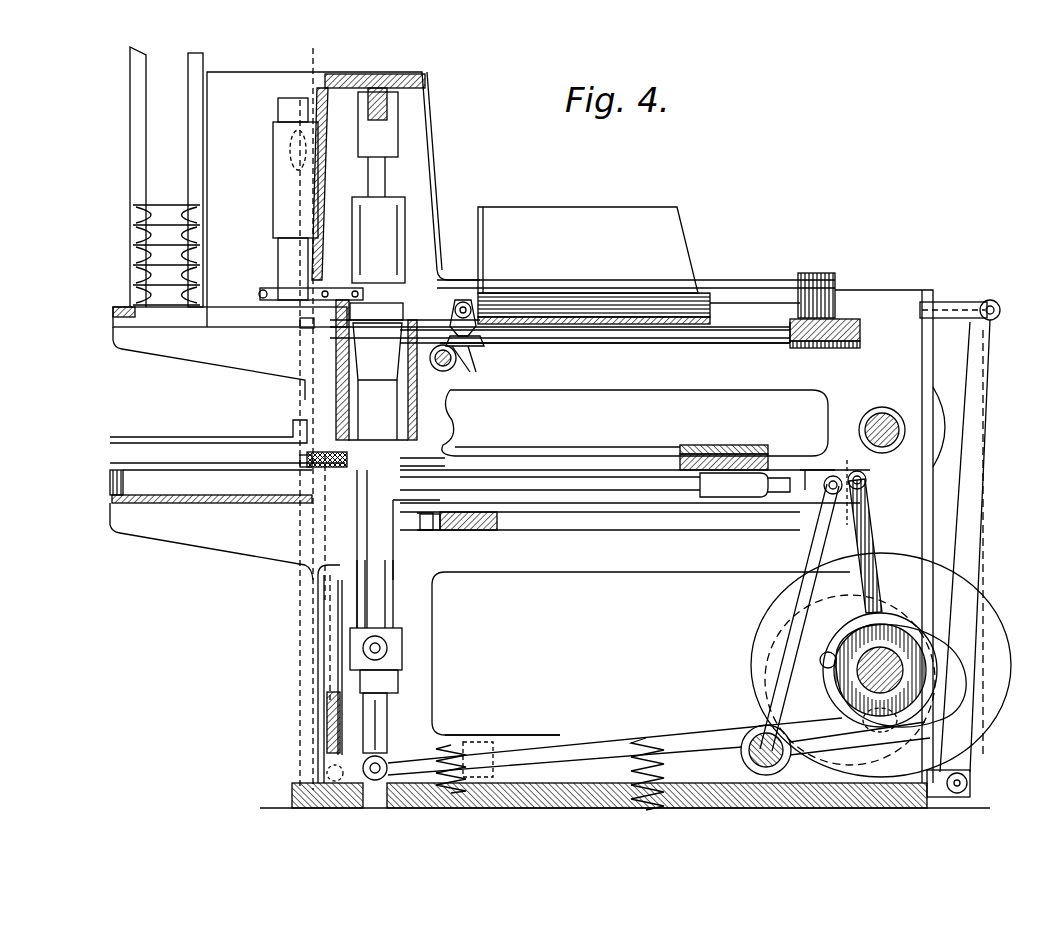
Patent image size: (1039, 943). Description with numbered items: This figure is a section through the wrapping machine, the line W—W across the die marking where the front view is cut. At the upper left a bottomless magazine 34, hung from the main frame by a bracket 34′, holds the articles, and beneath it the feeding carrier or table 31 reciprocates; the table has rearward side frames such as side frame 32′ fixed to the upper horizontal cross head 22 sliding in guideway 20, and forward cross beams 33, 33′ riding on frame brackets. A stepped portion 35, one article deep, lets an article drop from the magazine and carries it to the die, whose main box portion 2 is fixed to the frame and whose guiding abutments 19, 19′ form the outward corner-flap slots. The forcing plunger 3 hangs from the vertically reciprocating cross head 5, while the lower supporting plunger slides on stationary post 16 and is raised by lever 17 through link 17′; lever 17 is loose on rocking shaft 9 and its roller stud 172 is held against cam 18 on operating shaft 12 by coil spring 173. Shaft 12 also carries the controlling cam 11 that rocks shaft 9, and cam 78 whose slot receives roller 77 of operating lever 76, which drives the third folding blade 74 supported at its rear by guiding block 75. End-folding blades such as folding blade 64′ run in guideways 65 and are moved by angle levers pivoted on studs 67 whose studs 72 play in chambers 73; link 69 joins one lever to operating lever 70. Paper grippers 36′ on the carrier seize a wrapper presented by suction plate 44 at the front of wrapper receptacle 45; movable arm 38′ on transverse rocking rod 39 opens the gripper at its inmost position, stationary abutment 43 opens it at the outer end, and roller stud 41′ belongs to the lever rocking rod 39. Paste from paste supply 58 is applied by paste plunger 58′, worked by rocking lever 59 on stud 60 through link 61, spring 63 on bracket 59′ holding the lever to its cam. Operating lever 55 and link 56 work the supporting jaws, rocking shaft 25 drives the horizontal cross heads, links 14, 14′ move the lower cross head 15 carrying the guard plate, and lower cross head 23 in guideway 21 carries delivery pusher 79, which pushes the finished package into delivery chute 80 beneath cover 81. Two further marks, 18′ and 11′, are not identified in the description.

The bottomless magazine 34 is at (141, 142).
The cross beam 33 is at (112, 318).
The bracket 34′ is at (238, 72).
The axis line 18′ is at (333, 406).
The paste plunger 58′ is at (287, 108).
The paste supply 58 is at (285, 213).
The cross head 5 is at (380, 137).
The forcing plunger 3 is at (407, 203).
The stepped portion 35 is at (347, 292).
The stationary abutment 43 is at (262, 290).
The feeding carrier or table 31 is at (223, 307).
The wrapper receptacle 45 is at (543, 215).
The paper gripper 36′ is at (455, 295).
The movable arm 38′ is at (478, 342).
The transverse rocking rod 39 is at (465, 368).
The suction plate 44 is at (513, 318).
The side frame 32′ is at (745, 322).
The horizontal guideway 20 is at (747, 344).
The upper cross head 22 is at (848, 319).
The link 56 is at (953, 305).
The roller stud 41′ is at (967, 380).
The operating lever 55 is at (980, 408).
The rocking shaft 25 is at (897, 402).
The third folding blade 74 is at (541, 446).
The chamber 73 is at (450, 450).
The guiding block 75 is at (713, 444).
The stud 72 is at (446, 458).
The stud 67 is at (560, 487).
The horizontal guideway 21 is at (565, 532).
The lower cross head 23 is at (470, 533).
The block 11′ is at (396, 482).
The link 14 is at (394, 582).
The link 14′ is at (376, 549).
The cover 81 is at (222, 435).
The delivery chute 80 is at (210, 464).
The delivery pusher 79 is at (300, 460).
The guideway 65 is at (303, 463).
The link 61 is at (303, 402).
The main box portion 2 is at (335, 355).
The guiding abutment 19′ is at (377, 351).
The folding blade 64′ is at (382, 443).
The cross beam 33′ is at (300, 329).
The lower cross head 15 is at (325, 710).
The link 17′ is at (378, 680).
The stationary post 16 is at (360, 793).
The rocking lever 59 is at (407, 768).
The bracket 59′ is at (483, 740).
The spring 63 is at (460, 745).
The coil spring 173 is at (640, 740).
The lever 17 is at (555, 750).
The stud 60 is at (607, 810).
The section line W— W is at (625, 819).
The rocking shaft 9 is at (757, 737).
The operating lever 70 is at (810, 532).
The link 69 is at (790, 518).
The operating lever 76 is at (872, 550).
The cam 78 is at (812, 548).
The controlling cam 11 is at (990, 624).
The cam 18 is at (880, 657).
The operating shaft 12 is at (900, 666).
The guiding abutment 19 is at (945, 650).
The roller 77 is at (828, 652).
The roller stud 172 is at (850, 686).